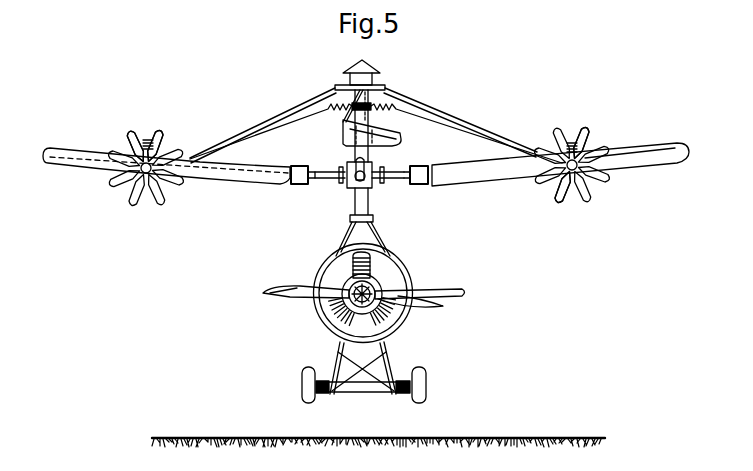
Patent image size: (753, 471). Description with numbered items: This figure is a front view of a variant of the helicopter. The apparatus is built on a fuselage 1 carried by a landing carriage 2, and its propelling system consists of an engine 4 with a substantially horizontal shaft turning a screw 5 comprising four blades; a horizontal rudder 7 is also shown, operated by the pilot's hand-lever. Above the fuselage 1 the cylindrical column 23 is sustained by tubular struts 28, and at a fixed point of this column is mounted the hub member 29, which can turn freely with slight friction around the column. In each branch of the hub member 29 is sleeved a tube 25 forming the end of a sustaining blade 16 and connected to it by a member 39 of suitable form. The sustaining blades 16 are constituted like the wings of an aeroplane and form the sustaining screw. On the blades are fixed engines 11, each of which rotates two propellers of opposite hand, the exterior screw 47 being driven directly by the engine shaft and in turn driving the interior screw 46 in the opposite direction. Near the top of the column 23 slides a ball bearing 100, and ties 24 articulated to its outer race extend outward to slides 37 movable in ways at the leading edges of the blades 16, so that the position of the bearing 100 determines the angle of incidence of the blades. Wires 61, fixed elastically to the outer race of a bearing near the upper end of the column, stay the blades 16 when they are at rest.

The fuselage 1 is at (332, 268).
The landing carriage 2 is at (397, 366).
The engine 4 is at (371, 270).
The screw 5 is at (296, 292).
The horizontal rudder 7 is at (450, 292).
The engines 11 is at (147, 182).
The sustaining blades 16 is at (395, 138).
The cylindrical column 23 is at (372, 100).
The ties 24 is at (278, 113).
The tube 25 is at (357, 203).
The tubular struts 28 is at (377, 240).
The hub member 29 is at (348, 178).
The slides 37 is at (525, 152).
The member 39 is at (424, 178).
The interior screw 46 is at (161, 134).
The exterior screw 47 is at (134, 130).
The wires 61 is at (450, 128).
The ball bearing 100 is at (345, 84).